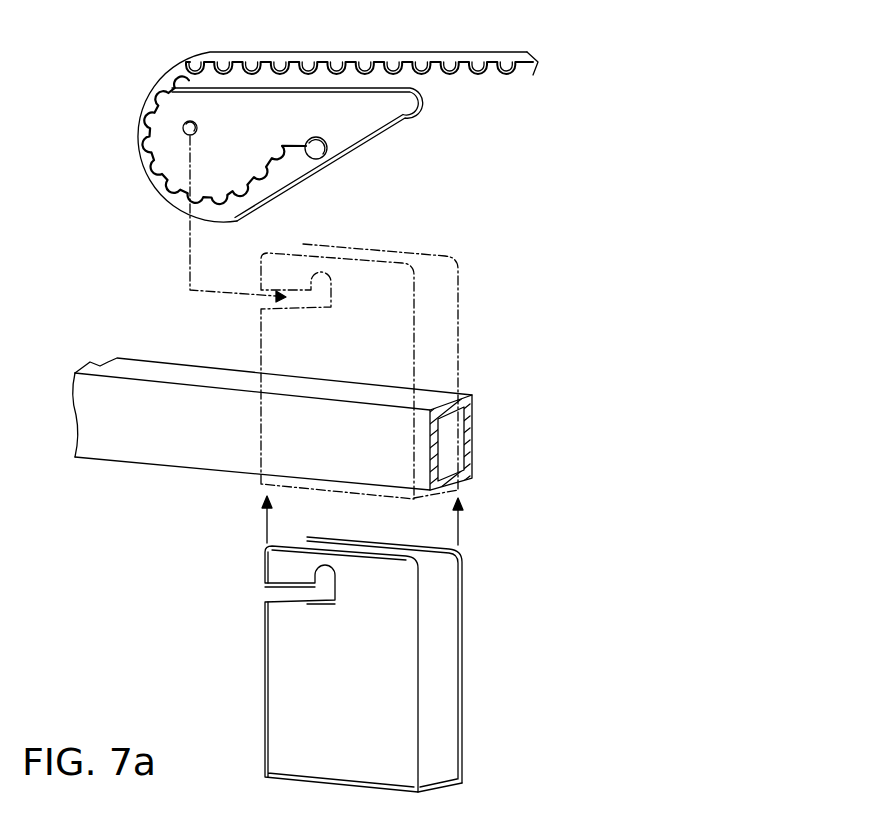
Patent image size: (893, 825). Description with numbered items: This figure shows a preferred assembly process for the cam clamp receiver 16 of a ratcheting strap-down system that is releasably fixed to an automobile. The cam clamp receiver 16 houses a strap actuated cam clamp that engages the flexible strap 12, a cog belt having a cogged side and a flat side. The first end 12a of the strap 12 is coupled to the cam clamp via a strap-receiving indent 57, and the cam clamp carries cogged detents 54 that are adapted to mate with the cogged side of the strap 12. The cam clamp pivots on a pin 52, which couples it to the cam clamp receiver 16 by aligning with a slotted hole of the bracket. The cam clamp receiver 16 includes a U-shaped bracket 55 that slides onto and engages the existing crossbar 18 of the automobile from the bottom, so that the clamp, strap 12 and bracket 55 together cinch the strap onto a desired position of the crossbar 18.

The flexible strap 12 is at (240, 63).
The first end of the flexible strap 12a is at (328, 154).
The pin 52 is at (184, 130).
The cogged detents 54 is at (168, 183).
The strap-receiving indent 57 is at (327, 150).
The crossbar 18 is at (440, 386).
The U-shaped bracket 55 is at (463, 682).
The cam clamp receiver 16 is at (525, 824).